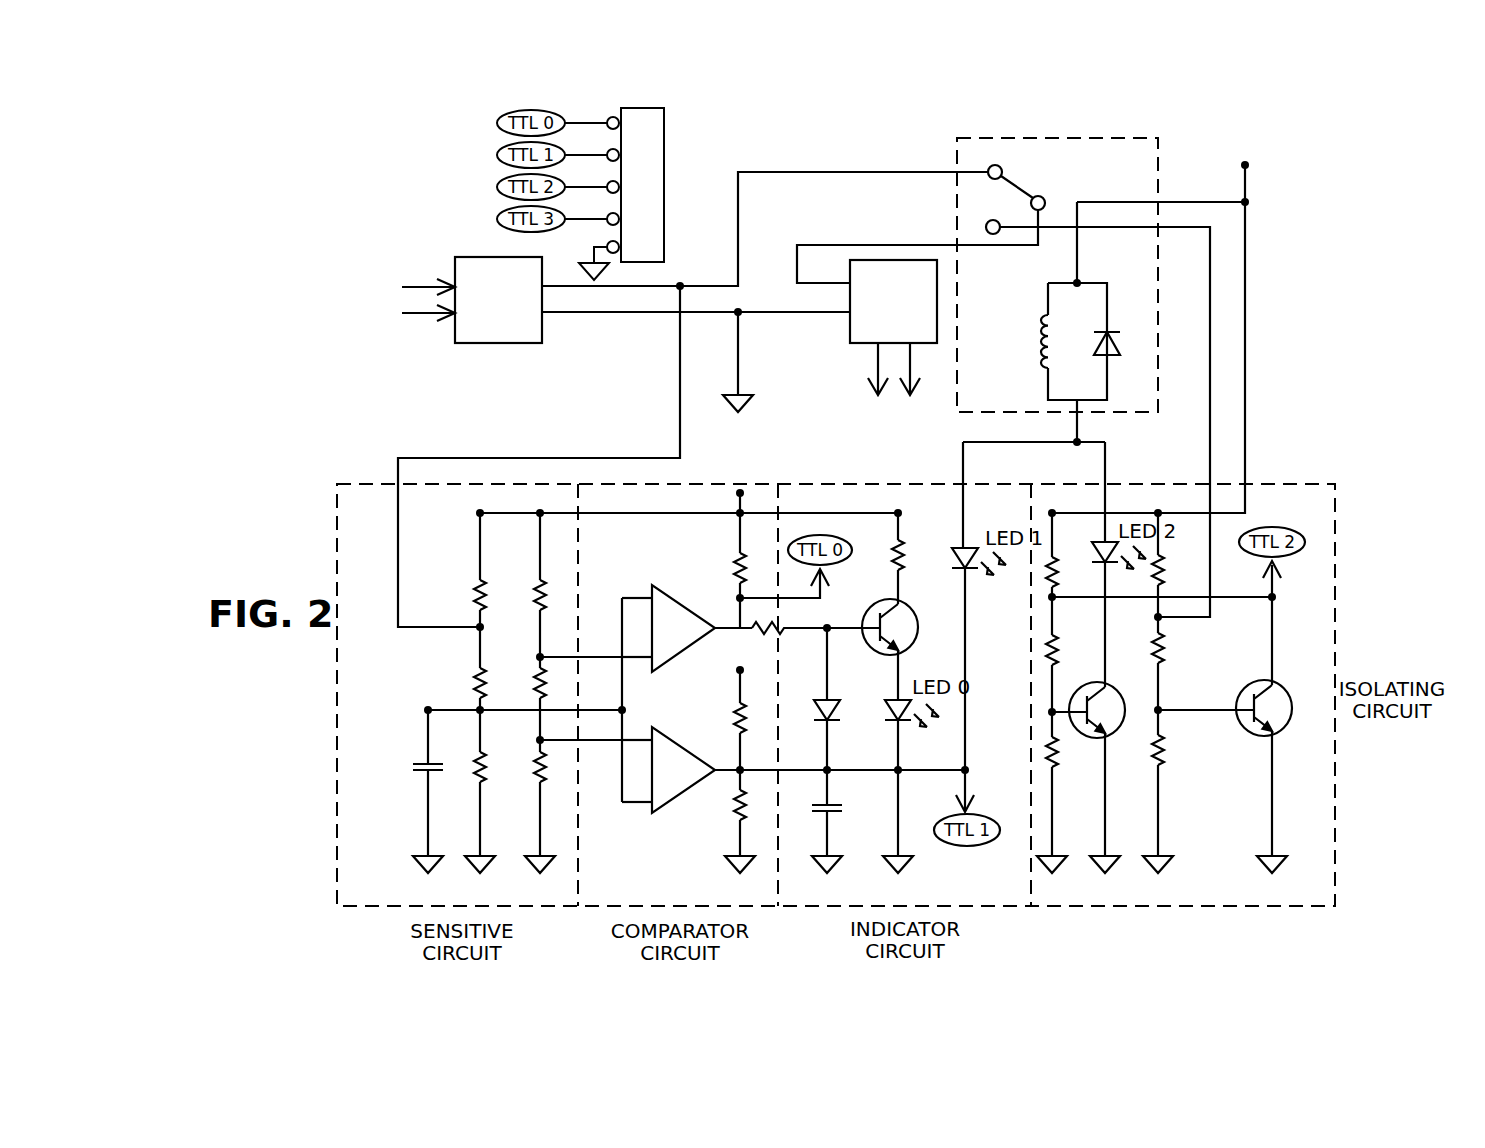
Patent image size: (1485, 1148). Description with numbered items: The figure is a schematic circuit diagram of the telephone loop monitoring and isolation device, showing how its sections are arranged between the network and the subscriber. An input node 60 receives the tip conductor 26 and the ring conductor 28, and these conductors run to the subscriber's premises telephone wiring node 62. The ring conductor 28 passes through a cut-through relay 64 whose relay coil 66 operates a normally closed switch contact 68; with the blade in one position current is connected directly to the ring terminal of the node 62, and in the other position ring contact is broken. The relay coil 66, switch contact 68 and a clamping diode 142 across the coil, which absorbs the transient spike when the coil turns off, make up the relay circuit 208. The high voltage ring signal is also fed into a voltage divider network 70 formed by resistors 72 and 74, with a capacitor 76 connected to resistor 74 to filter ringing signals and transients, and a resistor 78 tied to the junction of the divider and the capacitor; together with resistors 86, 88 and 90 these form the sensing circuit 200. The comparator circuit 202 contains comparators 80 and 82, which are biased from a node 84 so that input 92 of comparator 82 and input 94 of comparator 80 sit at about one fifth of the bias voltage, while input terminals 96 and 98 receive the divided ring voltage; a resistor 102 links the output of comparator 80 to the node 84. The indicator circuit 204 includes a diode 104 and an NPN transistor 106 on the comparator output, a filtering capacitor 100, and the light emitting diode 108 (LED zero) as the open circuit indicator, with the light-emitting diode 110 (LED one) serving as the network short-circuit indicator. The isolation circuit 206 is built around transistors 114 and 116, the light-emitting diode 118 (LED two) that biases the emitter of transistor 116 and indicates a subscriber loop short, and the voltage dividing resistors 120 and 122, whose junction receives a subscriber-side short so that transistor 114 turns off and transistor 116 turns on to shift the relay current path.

The tip conductor 26 is at (412, 282).
The ring conductor 28 is at (412, 320).
The input node 60 is at (500, 343).
The subscriber's premises telephone wiring node 62 is at (848, 327).
The cut-through relay 64 is at (1157, 140).
The relay coil 66 is at (1038, 325).
The switch contact 68 is at (1010, 183).
The voltage divider network 70 is at (441, 595).
The resistor 72 is at (486, 585).
The resistor 74 is at (464, 678).
The capacitor 76 is at (416, 743).
The resistor 78 is at (479, 766).
The comparator 80 is at (691, 614).
The comparator 82 is at (691, 752).
The node 84 is at (737, 508).
The resistor 86 is at (518, 578).
The resistor 88 is at (514, 678).
The resistor 90 is at (516, 734).
The input 92 is at (652, 741).
The input 94 is at (652, 654).
The input terminal 96 is at (652, 594).
The input terminal 98 is at (652, 804).
The capacitor 100 is at (832, 808).
The resistor 102 is at (733, 567).
The diode 104 is at (813, 698).
The NPN transistor 106 is at (918, 617).
The light emitting diode 108 is at (888, 697).
The light-emitting diode 110 is at (958, 543).
The transistor 114 is at (1293, 708).
The transistor 116 is at (1135, 680).
The light-emitting diode 118 is at (1098, 542).
The resistor 120 is at (1167, 567).
The resistor 122 is at (1168, 643).
The diode 142 is at (1118, 353).
The sensing circuit 200 is at (337, 815).
The comparator circuit 202 is at (680, 907).
The indicator circuit 204 is at (833, 898).
The isolation circuit 206 is at (1163, 903).
The relay circuit 208 is at (1158, 162).